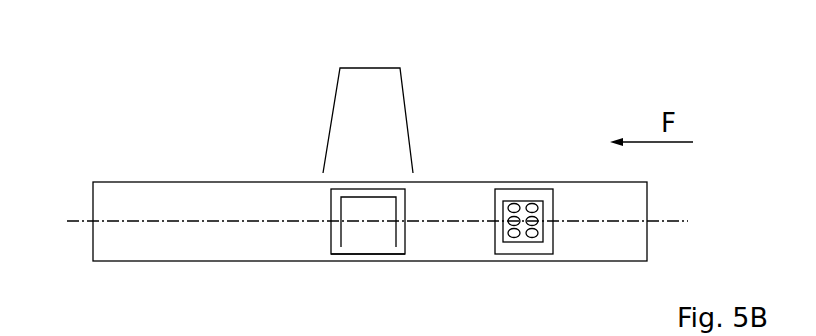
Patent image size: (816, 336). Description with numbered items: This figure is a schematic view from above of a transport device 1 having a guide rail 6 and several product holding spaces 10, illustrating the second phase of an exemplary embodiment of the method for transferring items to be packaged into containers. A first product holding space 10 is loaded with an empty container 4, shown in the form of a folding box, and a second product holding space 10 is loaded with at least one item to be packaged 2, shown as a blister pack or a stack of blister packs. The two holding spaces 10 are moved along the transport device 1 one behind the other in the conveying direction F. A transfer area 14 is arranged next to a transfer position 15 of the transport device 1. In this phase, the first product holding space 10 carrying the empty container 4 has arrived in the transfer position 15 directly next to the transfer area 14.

The transport device 1 is at (189, 104).
The item to be packaged 2 is at (531, 205).
The container 4 is at (395, 218).
The guide rail 6 is at (143, 182).
The product holding space 10 is at (377, 189).
The transfer area 14 is at (390, 98).
The transfer position 15 is at (372, 254).